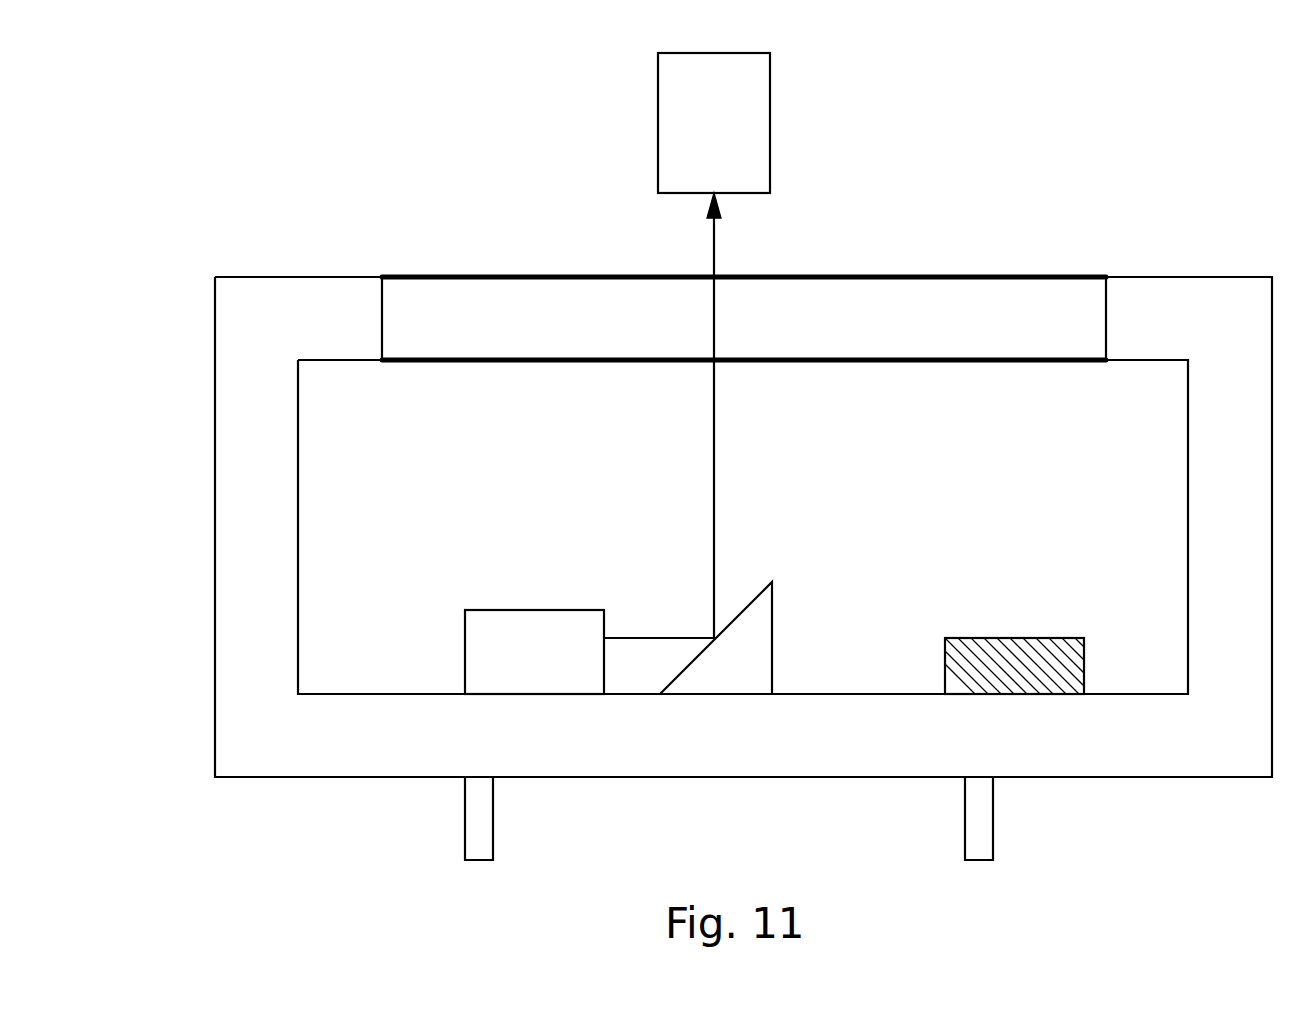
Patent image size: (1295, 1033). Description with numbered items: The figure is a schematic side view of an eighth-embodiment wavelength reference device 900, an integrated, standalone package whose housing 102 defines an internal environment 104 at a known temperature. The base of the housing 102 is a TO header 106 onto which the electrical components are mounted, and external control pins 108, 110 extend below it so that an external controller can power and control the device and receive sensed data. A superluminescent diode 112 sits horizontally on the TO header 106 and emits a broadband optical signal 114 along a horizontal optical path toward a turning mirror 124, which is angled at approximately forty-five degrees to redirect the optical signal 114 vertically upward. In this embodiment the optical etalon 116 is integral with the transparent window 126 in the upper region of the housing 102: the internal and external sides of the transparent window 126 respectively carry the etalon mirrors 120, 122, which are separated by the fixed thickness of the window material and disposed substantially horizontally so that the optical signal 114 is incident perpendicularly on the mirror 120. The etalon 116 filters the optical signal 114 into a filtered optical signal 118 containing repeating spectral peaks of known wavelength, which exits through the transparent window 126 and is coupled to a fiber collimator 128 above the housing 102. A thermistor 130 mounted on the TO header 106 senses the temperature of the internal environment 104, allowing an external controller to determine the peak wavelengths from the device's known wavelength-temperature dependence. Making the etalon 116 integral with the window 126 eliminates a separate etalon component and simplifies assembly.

The wavelength reference device 900 is at (424, 150).
The housing 102 is at (303, 277).
The internal environment 104 is at (743, 527).
The TO header 106 is at (793, 750).
The external control pin 108 is at (465, 820).
The external control pin 110 is at (967, 822).
The superluminescent diode 112 is at (508, 610).
The optical signal 114 is at (670, 637).
The optical etalon 116 is at (483, 305).
The filtered optical signal 118 is at (712, 395).
The etalon mirror 120 is at (1040, 362).
The etalon mirror 122 is at (1040, 277).
The turning mirror 124 is at (742, 602).
The transparent window 126 is at (838, 277).
The fiber collimator 128 is at (770, 110).
The thermistor 130 is at (1055, 638).